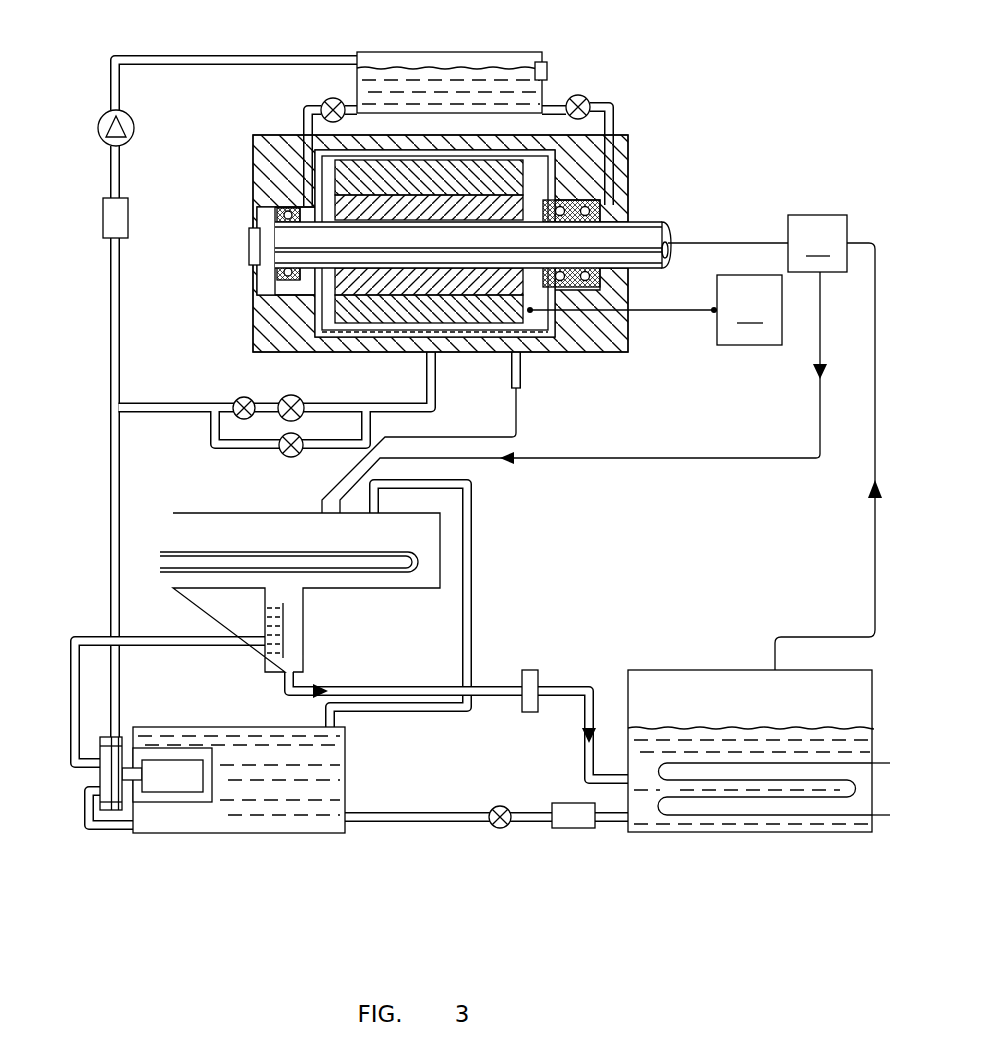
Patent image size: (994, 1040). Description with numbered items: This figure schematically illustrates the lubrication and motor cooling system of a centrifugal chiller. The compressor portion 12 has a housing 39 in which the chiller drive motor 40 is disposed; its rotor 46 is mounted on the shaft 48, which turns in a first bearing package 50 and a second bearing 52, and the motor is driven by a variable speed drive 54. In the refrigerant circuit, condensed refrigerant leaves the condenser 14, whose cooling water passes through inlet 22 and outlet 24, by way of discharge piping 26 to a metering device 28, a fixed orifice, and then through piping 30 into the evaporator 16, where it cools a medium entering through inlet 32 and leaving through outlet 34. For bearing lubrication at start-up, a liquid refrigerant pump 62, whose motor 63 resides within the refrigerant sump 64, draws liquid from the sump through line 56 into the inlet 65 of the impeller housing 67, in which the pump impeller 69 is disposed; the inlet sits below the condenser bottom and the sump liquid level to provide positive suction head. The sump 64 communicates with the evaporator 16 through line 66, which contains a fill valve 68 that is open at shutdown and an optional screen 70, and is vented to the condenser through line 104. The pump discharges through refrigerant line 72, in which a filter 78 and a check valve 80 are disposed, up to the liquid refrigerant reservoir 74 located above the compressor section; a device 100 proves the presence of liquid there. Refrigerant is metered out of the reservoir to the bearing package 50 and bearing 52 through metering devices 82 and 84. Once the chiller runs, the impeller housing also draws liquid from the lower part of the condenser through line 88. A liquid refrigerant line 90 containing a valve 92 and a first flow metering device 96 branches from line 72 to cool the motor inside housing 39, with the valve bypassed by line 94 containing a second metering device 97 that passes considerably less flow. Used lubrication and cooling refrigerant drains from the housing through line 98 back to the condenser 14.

The compressor portion 12 is at (775, 442).
The condenser 14 is at (190, 513).
The evaporator 16 is at (735, 833).
The inlet 22 is at (175, 552).
The outlet 24 is at (175, 576).
The discharge piping 26 is at (283, 690).
The metering device 28 is at (535, 670).
The piping 30 is at (586, 690).
The inlet 32 is at (880, 760).
The outlet 34 is at (880, 818).
The housing 39 is at (268, 135).
The chiller drive motor 40 is at (522, 176).
The rotor 46 is at (400, 285).
The shaft 48 is at (666, 226).
The first bearing package 50 is at (592, 205).
The second bearing 52 is at (272, 200).
The variable speed drive 54 is at (654, 310).
The line 56 is at (85, 800).
The liquid refrigerant pump 62 is at (150, 802).
The motor 63 is at (180, 793).
The refrigerant sump 64 is at (300, 833).
The inlet 65 is at (99, 770).
The line 66 is at (425, 823).
The housing 67 is at (99, 742).
The fill valve 68 is at (505, 806).
The pump impeller 69 is at (101, 810).
The screen 70 is at (575, 828).
The refrigerant line 72 is at (110, 318).
The liquid refrigerant reservoir 74 is at (456, 50).
The filter 78 is at (103, 215).
The check valve 80 is at (98, 120).
The metering device 82 is at (590, 97).
The metering device 84 is at (322, 100).
The line 88 is at (222, 637).
The liquid refrigerant line 90 is at (176, 402).
The valve 92 is at (248, 398).
The bypass line 94 is at (240, 449).
The first flow metering device 96 is at (301, 397).
The second metering device 97 is at (298, 455).
The line 98 is at (511, 382).
The device 100 is at (548, 70).
The line 104 is at (472, 556).